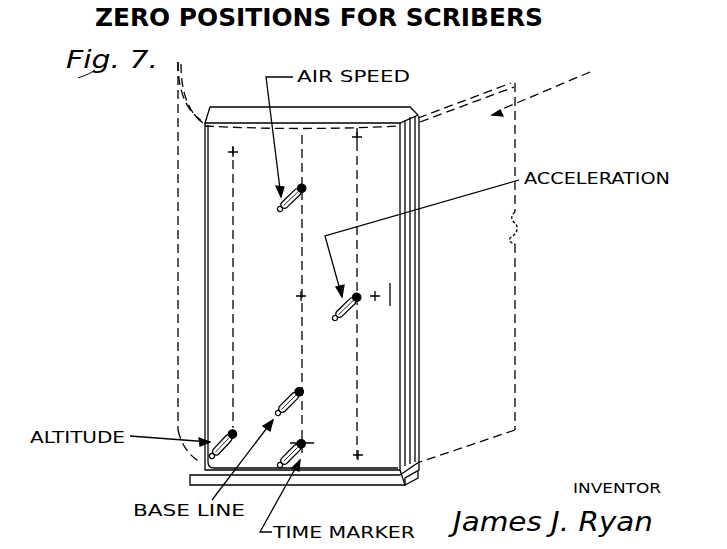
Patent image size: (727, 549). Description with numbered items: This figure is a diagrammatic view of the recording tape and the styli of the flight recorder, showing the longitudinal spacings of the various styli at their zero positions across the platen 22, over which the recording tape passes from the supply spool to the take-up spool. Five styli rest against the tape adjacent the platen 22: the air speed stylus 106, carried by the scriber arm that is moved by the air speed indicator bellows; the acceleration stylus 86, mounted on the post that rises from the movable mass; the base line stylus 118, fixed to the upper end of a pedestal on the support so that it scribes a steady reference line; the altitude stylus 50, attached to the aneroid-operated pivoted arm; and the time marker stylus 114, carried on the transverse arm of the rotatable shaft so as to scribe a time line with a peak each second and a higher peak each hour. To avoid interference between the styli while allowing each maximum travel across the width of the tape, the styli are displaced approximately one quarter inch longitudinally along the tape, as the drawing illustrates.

The platen 22 is at (242, 108).
The stylus 106 is at (279, 212).
The stylus 86 is at (334, 321).
The base line stylus 118 is at (277, 410).
The stylus 50 is at (208, 456).
The stylus 114 is at (277, 454).